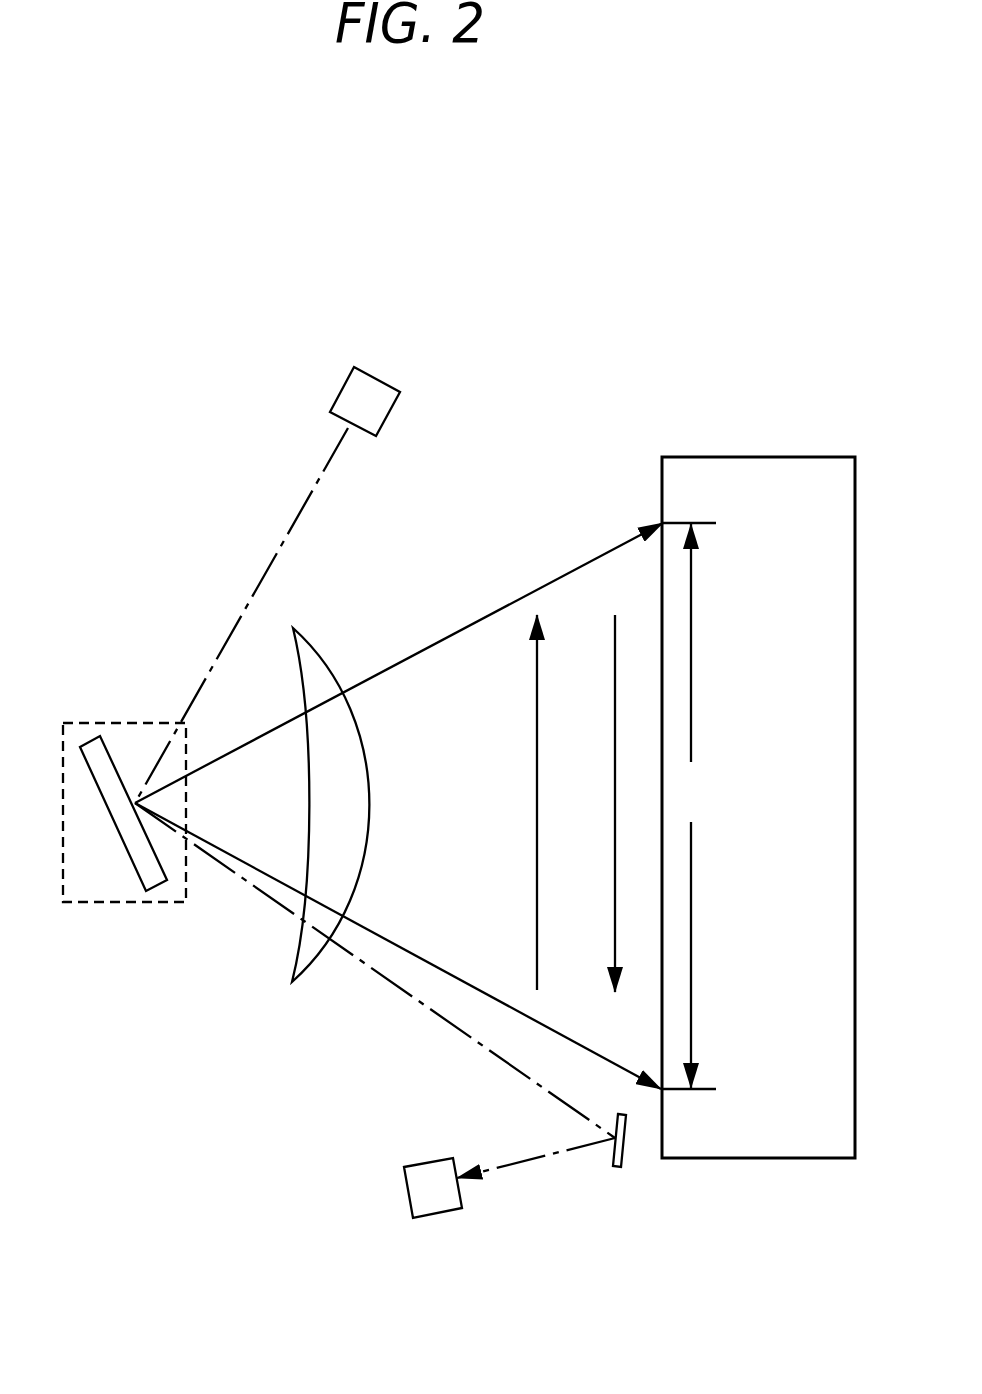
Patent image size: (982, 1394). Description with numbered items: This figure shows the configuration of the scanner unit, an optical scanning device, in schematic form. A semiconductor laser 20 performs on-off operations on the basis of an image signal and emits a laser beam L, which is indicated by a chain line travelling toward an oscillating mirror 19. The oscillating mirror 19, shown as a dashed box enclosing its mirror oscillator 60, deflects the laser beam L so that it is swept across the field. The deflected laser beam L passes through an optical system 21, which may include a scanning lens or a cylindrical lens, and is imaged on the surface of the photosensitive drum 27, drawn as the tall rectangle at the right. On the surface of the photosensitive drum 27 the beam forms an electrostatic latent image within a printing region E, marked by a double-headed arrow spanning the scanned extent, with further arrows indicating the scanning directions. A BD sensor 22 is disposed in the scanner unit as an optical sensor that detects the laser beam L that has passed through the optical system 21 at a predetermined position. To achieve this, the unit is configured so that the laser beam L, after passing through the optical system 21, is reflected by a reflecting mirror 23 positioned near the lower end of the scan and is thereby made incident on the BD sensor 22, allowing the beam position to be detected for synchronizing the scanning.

The oscillating mirror 19 is at (132, 723).
The semiconductor laser 20 is at (352, 397).
The optical system 21 is at (325, 662).
The BD sensor 22 is at (438, 1197).
The reflecting mirror 23 is at (625, 1157).
The photosensitive drum 27 is at (770, 478).
The mirror oscillator 60 is at (145, 863).
The laser beam L is at (297, 522).
The printing region E is at (688, 806).